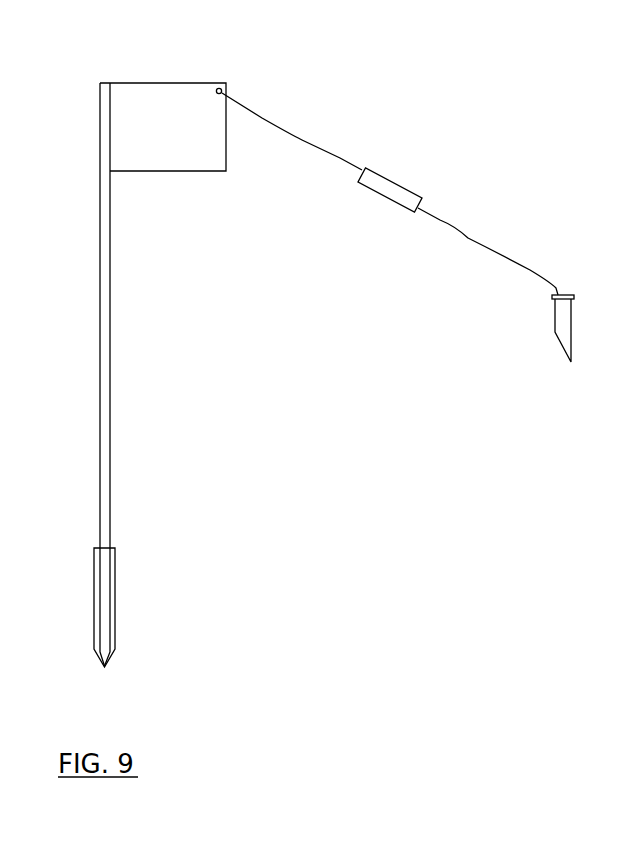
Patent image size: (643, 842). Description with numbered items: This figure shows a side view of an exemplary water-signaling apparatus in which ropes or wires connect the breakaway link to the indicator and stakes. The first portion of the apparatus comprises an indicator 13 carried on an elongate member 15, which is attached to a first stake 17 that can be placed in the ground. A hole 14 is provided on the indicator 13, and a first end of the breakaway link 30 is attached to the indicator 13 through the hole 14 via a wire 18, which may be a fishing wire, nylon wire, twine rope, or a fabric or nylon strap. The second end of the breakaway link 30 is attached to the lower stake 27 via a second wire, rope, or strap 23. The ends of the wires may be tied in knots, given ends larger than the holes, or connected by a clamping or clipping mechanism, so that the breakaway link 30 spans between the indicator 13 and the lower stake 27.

The indicator 13 is at (158, 94).
The hole 14 is at (217, 89).
The elongate member 15 is at (107, 362).
The first stake 17 is at (108, 588).
The wire 18 is at (278, 122).
The second wire, rope, or strap 23 is at (467, 235).
The lower stake 27 is at (560, 332).
The breakaway link 30 is at (392, 196).